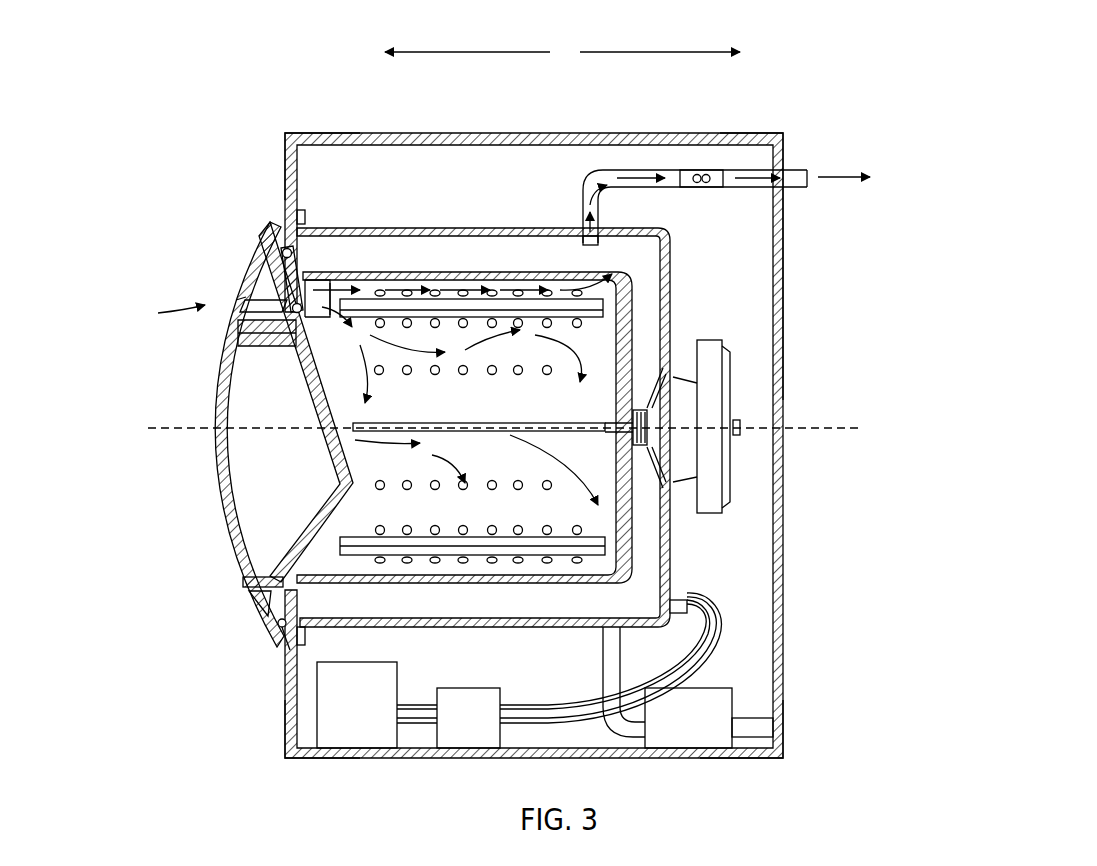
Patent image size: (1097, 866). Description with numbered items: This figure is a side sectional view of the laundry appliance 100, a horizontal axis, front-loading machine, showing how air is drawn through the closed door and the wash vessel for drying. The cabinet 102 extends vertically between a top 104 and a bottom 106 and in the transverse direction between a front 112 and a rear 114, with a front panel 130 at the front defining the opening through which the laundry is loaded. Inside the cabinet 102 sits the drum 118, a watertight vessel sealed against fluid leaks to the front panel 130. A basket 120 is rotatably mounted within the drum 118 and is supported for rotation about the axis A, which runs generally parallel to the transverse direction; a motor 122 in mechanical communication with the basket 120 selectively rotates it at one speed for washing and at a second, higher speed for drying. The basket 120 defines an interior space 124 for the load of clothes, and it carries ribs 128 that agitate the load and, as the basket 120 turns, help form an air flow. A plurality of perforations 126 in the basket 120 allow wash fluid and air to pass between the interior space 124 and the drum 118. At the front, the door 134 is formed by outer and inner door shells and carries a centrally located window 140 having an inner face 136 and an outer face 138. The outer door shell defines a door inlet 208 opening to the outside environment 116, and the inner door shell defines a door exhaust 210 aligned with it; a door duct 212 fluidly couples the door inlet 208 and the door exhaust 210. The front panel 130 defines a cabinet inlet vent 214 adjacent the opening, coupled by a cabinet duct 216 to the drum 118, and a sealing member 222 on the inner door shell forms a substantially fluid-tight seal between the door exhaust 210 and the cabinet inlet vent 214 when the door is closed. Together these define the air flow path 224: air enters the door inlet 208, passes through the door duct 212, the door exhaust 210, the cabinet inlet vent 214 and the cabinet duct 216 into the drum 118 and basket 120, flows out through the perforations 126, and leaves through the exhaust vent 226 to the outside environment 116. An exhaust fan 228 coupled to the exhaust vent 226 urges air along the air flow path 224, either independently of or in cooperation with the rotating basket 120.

The laundry appliance 100 is at (298, 78).
The cabinet 102 is at (784, 478).
The top 104 is at (796, 132).
The bottom 106 is at (808, 738).
The front 112 is at (280, 136).
The rear 114 is at (786, 280).
The outside environment 116 is at (56, 378).
The drum 118 is at (440, 628).
The basket 120 is at (452, 272).
The motor 122 is at (712, 365).
The interior space 124 is at (497, 422).
The perforations 126 is at (518, 486).
The ribs 128 is at (368, 318).
The front panel 130 is at (287, 722).
The door 134 is at (241, 601).
The inner face 136 is at (313, 383).
The outer face 138 is at (217, 533).
The window 140 is at (200, 443).
The door inlet 208 is at (350, 447).
The door exhaust 210 is at (273, 287).
The door duct 212 is at (250, 302).
The cabinet inlet vent 214 is at (330, 318).
The cabinet duct 216 is at (312, 318).
The sealing member 222 is at (288, 215).
The air flow path 224 is at (137, 313).
The exhaust vent 226 is at (653, 170).
The exhaust fan 228 is at (717, 170).